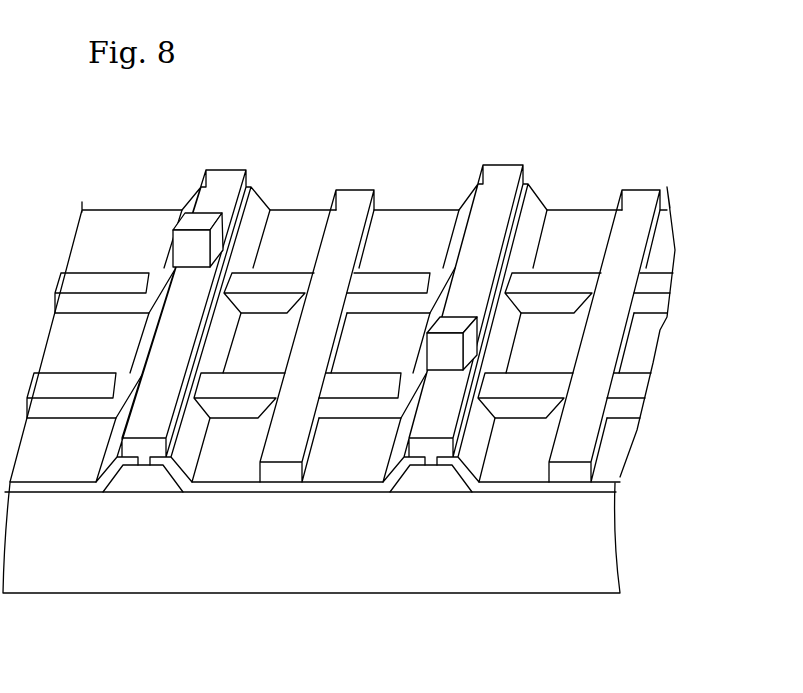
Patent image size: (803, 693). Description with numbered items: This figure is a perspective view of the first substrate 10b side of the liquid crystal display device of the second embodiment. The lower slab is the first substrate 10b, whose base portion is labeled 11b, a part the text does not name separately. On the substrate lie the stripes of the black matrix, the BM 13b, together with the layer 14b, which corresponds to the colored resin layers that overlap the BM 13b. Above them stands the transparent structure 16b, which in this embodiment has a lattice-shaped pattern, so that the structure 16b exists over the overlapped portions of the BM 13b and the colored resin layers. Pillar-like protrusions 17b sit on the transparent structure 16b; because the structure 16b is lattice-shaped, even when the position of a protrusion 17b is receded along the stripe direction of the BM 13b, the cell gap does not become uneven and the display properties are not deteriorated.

The first substrate 10b is at (348, 389).
The rear glass substrate 11b is at (303, 562).
The BM 13b is at (145, 486).
The dielectric layer 14b is at (67, 486).
The transparent structure 16b is at (347, 284).
The pillar-like protrusion 17b is at (216, 262).